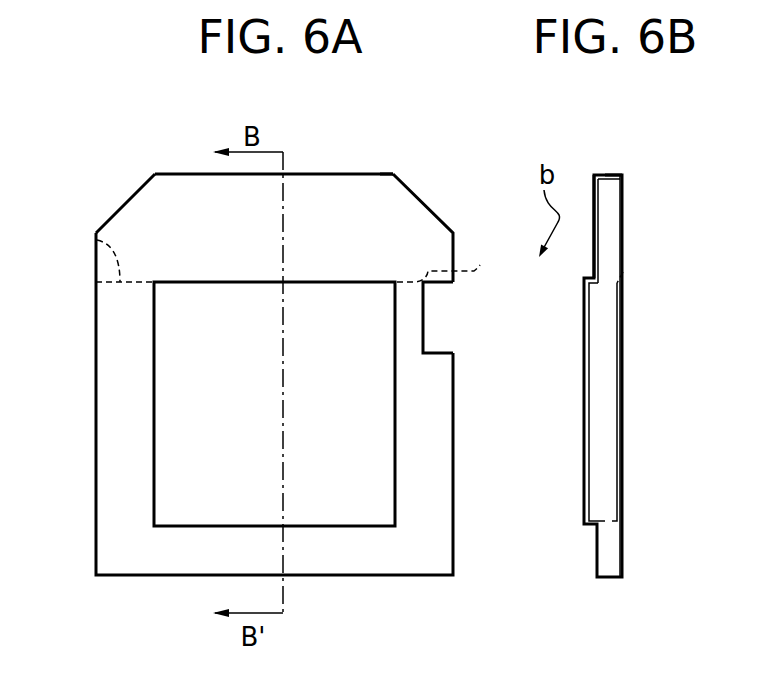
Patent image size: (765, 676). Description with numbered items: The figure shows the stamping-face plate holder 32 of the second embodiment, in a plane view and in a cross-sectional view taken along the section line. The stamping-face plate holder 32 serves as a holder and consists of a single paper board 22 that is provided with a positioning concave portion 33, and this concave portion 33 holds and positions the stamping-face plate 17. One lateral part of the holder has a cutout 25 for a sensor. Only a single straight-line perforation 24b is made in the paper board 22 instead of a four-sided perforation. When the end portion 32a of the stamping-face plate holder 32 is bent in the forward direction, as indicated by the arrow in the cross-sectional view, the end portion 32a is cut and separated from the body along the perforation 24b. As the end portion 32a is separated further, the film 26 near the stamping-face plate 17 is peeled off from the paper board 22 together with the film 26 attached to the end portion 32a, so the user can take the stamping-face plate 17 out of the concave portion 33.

In FIG. 6A, the stamping-face plate 17 is at (368, 298).
In FIG. 6B, the stamping-face plate 17 is at (593, 328).
In FIG. 6A, the paper board 22 is at (437, 208).
In FIG. 6B, the paper board 22 is at (622, 172).
In FIG. 6A, the straight-line perforation 24b is at (95, 243).
In FIG. 6B, the straight-line perforation 24b is at (623, 272).
In FIG. 6A, the cutout for a sensor 25 is at (438, 319).
In FIG. 6A, the film 26 is at (398, 210).
In FIG. 6B, the film 26 is at (595, 173).
In FIG. 6A, the stamping-face plate holder 32 is at (387, 166).
In FIG. 6B, the stamping-face plate holder 32 is at (616, 165).
In FIG. 6A, the end portion 32a is at (317, 195).
In FIG. 6B, the end portion 32a is at (613, 212).
In FIG. 6B, the positioning concave portion 33 is at (604, 283).